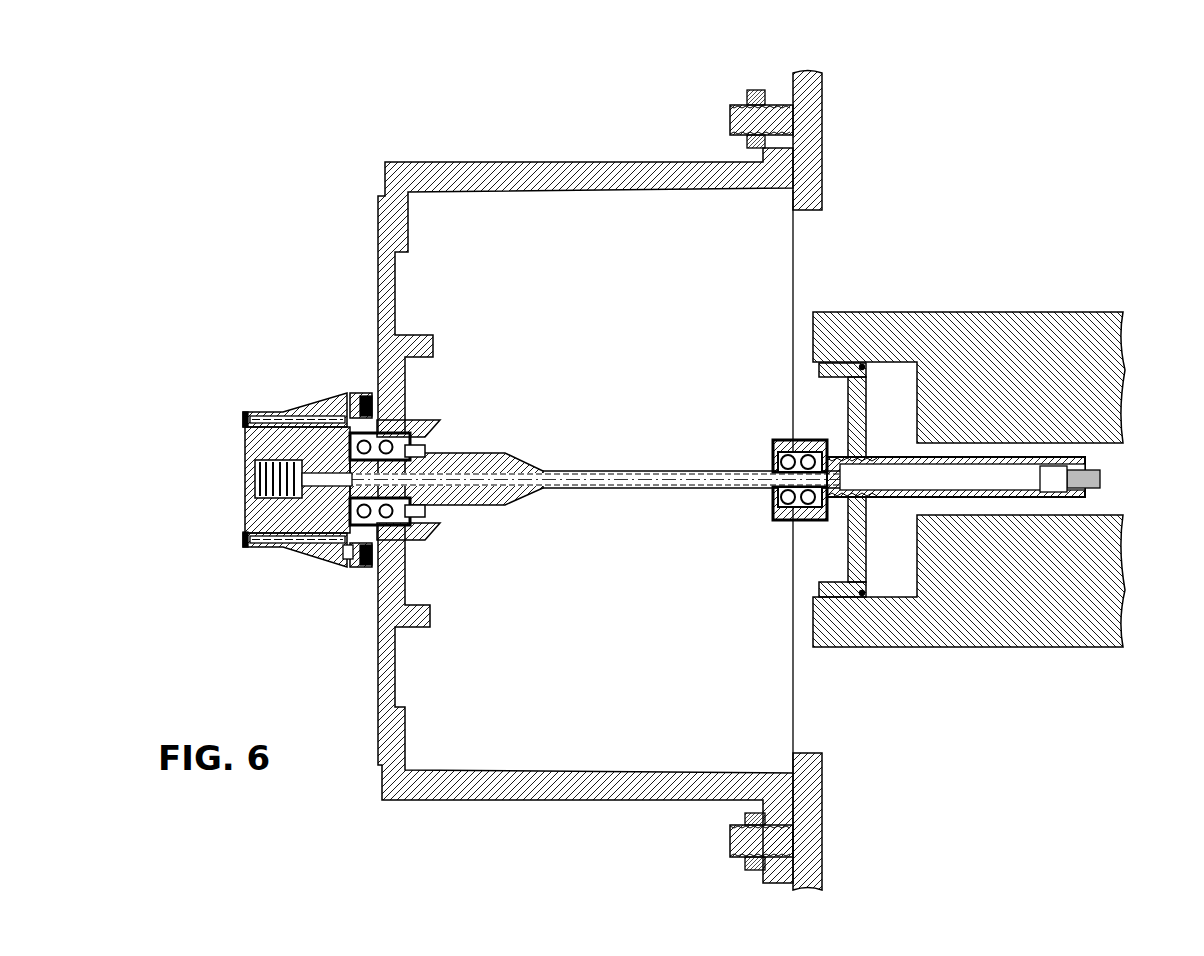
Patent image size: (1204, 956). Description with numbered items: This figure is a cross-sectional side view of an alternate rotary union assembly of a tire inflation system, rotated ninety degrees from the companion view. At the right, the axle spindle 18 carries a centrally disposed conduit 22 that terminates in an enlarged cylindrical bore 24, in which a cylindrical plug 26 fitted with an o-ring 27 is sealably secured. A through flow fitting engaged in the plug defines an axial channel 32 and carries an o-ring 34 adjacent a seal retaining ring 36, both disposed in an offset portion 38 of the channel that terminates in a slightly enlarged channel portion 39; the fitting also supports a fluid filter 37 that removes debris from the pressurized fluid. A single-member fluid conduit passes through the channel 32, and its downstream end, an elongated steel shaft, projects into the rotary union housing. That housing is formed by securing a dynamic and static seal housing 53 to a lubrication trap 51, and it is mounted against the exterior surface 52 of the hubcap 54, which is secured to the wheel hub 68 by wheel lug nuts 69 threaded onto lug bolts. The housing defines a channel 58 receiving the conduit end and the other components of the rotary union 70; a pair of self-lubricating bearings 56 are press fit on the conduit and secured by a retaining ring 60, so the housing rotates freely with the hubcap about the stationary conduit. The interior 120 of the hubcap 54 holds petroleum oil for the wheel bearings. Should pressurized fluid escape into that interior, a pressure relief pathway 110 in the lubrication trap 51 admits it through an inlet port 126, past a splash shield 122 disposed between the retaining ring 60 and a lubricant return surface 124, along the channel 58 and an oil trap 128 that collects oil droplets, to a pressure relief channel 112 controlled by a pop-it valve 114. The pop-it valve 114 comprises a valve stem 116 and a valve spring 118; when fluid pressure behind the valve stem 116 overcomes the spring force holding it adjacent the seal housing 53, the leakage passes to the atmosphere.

The axle spindle 18 is at (1057, 330).
The conduit 22 is at (1027, 508).
The cylindrical bore 24 is at (892, 390).
The cylindrical plug 26 is at (870, 390).
The o-ring 27 is at (863, 393).
The axial channel 32 is at (1057, 520).
The o-ring 34 is at (800, 440).
The seal retaining ring 36 is at (768, 498).
The fluid filter 37 is at (1103, 473).
The offset portion 38 is at (765, 491).
The enlarged channel portion 39 is at (800, 523).
The lubrication trap 51 is at (420, 543).
The exterior surface 52 is at (383, 228).
The dynamic and static seal housing 53 is at (327, 557).
The hubcap 54 is at (520, 170).
The self-lubricating bearings 56 is at (367, 563).
The channel 58 is at (412, 418).
The retaining ring 60 is at (438, 422).
The wheel hub 68 is at (822, 104).
The wheel lug nuts 69 is at (758, 90).
The rotary union 70 is at (318, 445).
The pressure relief pathway 110 is at (353, 556).
The pressure relief channel 112 is at (360, 412).
The pop-it valve 114 is at (238, 425).
The valve stem 116 is at (250, 422).
The valve spring 118 is at (345, 418).
The interior of the hubcap 120 is at (527, 754).
The splash shield 122 is at (420, 512).
The lubricant return surface 124 is at (428, 530).
The inlet port 126 is at (430, 510).
The oil trap 128 is at (405, 405).